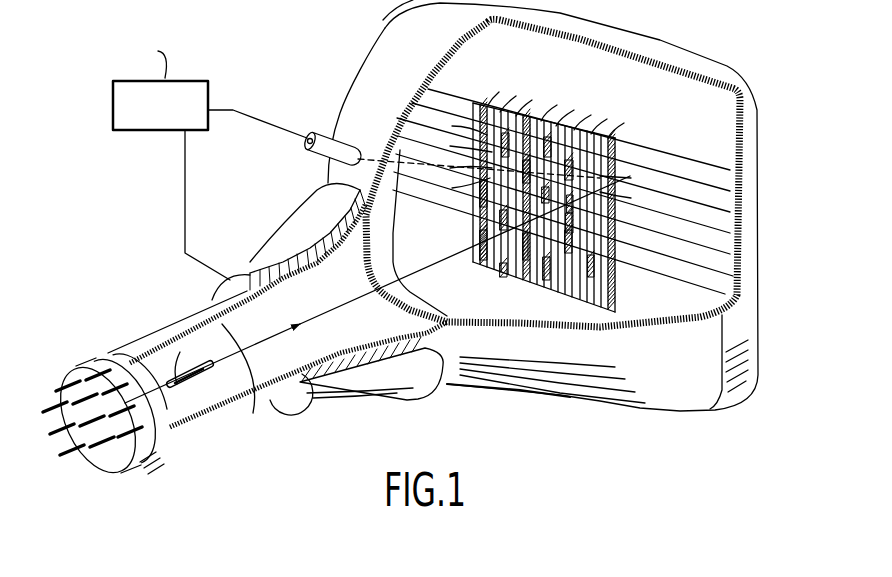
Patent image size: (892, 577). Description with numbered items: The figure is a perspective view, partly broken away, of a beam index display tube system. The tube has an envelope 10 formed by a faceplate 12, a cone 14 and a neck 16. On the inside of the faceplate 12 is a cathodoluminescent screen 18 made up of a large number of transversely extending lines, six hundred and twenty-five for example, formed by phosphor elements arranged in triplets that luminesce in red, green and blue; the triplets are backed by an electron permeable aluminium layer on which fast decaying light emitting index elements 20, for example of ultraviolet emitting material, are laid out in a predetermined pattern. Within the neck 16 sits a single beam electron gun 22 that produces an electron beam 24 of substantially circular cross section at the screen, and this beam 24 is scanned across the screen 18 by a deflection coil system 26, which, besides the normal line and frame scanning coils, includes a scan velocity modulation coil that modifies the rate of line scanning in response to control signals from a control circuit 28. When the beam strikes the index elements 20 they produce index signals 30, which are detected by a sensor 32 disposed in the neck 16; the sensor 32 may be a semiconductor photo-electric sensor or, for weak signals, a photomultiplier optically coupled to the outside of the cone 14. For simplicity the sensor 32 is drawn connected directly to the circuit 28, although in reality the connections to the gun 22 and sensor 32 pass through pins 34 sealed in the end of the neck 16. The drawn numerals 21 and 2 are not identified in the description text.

The envelope 10 is at (504, 394).
The faceplate 12 is at (760, 332).
The cone 14 is at (353, 108).
The neck 16 is at (193, 305).
The cathodoluminescent screen 18 is at (623, 291).
The index elements 20 is at (616, 145).
The faceplate 21 is at (724, 218).
The frame seal 2 is at (738, 180).
The electron gun 22 is at (208, 375).
The electron beam 24 is at (310, 321).
The deflection coil system 26 is at (293, 232).
The control circuit 28 is at (193, 98).
The index signals 30 is at (409, 233).
The sensor 32 is at (318, 160).
The pins 34 is at (117, 440).